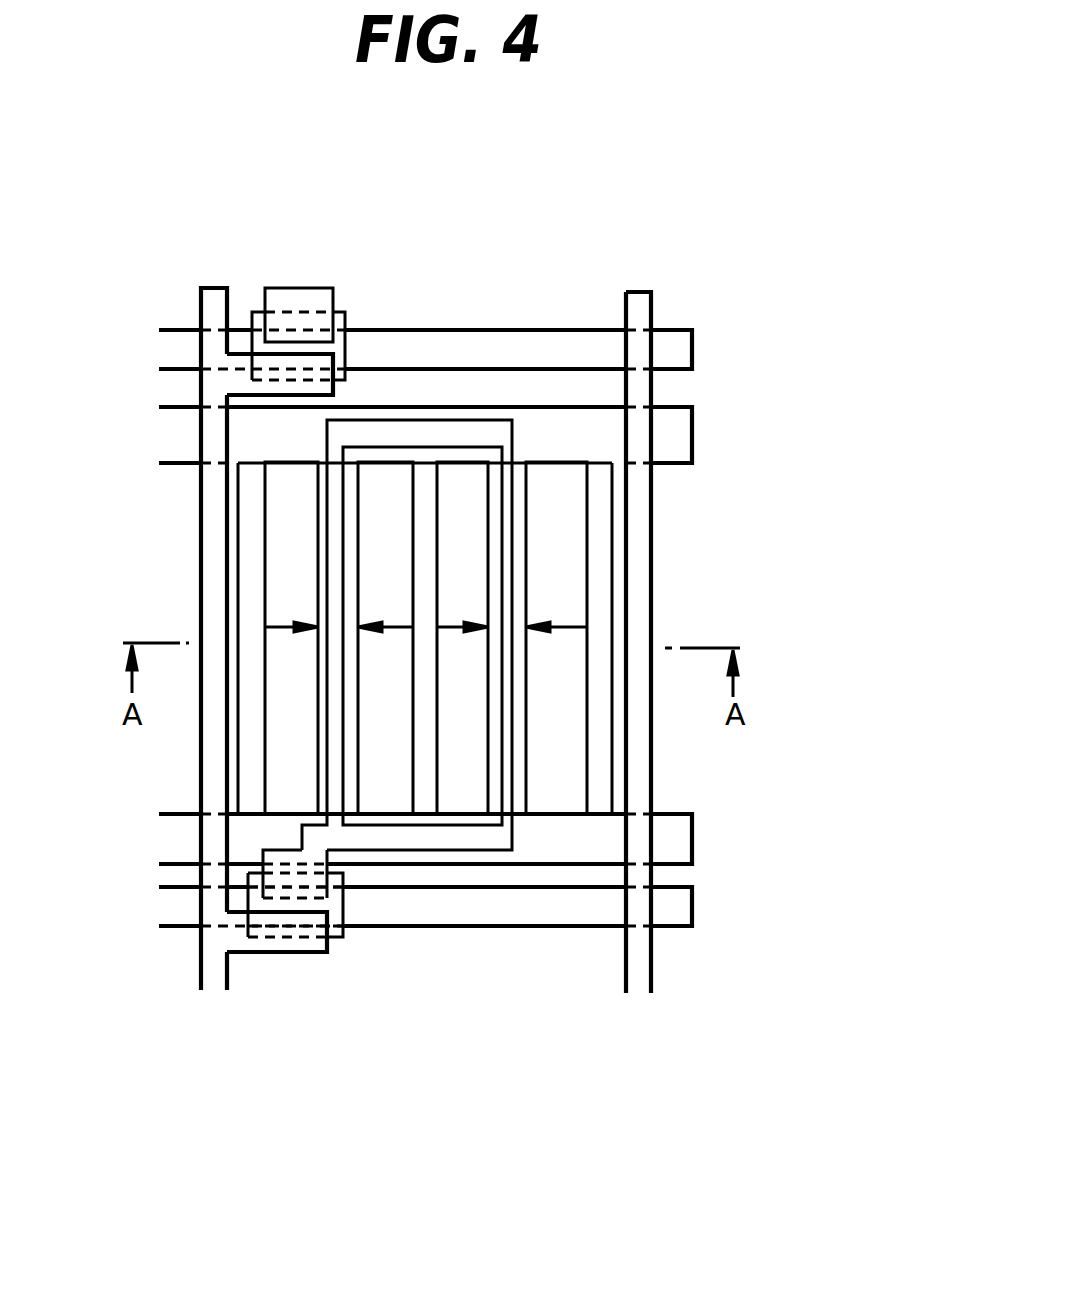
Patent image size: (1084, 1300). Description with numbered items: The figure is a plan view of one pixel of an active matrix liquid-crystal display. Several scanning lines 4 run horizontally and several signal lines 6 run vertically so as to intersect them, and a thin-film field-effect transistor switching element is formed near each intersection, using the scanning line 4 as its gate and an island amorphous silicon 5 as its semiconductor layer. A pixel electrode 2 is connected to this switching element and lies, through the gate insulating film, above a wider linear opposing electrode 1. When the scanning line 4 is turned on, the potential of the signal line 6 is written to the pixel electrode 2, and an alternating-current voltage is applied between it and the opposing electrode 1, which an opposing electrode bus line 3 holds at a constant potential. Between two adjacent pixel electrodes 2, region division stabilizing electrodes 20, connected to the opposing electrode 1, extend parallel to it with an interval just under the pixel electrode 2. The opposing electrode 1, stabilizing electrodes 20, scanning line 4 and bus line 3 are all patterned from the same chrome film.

The opposing electrode 1 is at (527, 533).
The pixel electrode 2 is at (512, 833).
The opposing electrode bus line 3 is at (690, 817).
The scanning line 4 is at (692, 333).
The island amorphous silicon 5 is at (345, 313).
The signal line 6 is at (210, 990).
The region division stabilizing electrode 20 is at (438, 578).